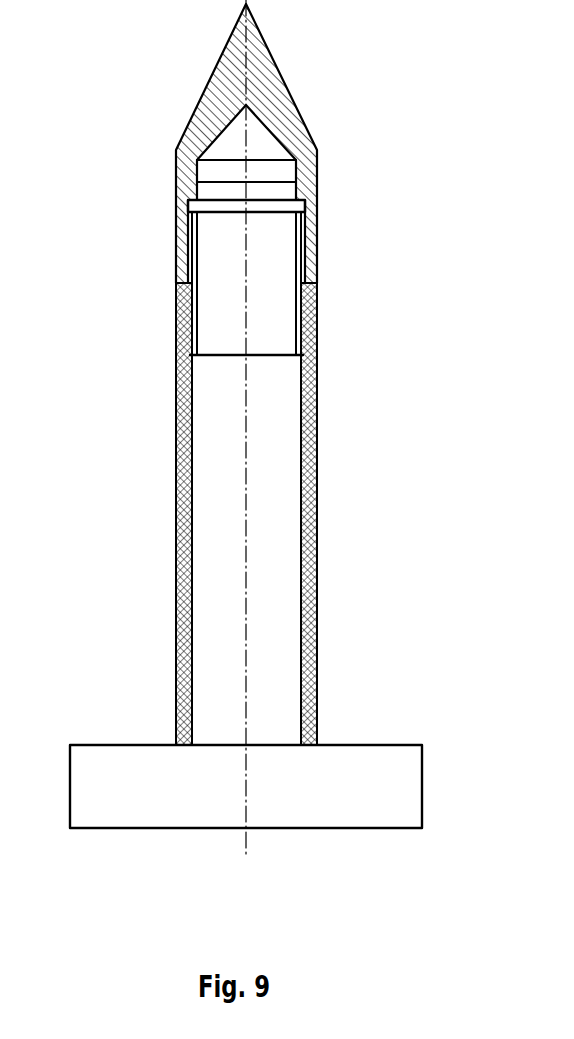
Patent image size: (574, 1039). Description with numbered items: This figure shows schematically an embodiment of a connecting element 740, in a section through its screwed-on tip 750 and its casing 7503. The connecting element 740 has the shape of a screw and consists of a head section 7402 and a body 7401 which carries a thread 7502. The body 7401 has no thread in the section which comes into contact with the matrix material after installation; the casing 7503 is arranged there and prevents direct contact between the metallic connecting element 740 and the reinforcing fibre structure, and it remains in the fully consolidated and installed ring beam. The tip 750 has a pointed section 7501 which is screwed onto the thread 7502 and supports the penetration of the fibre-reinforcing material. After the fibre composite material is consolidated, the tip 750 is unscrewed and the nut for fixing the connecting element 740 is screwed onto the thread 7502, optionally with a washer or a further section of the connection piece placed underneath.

The tip 750 is at (237, 194).
The pointed section 7501 is at (287, 87).
The thread 7502 is at (275, 175).
The casing 7503 is at (177, 347).
The connecting element 740 is at (244, 555).
The bolt body 7401 is at (290, 538).
The bolt head 7402 is at (338, 765).